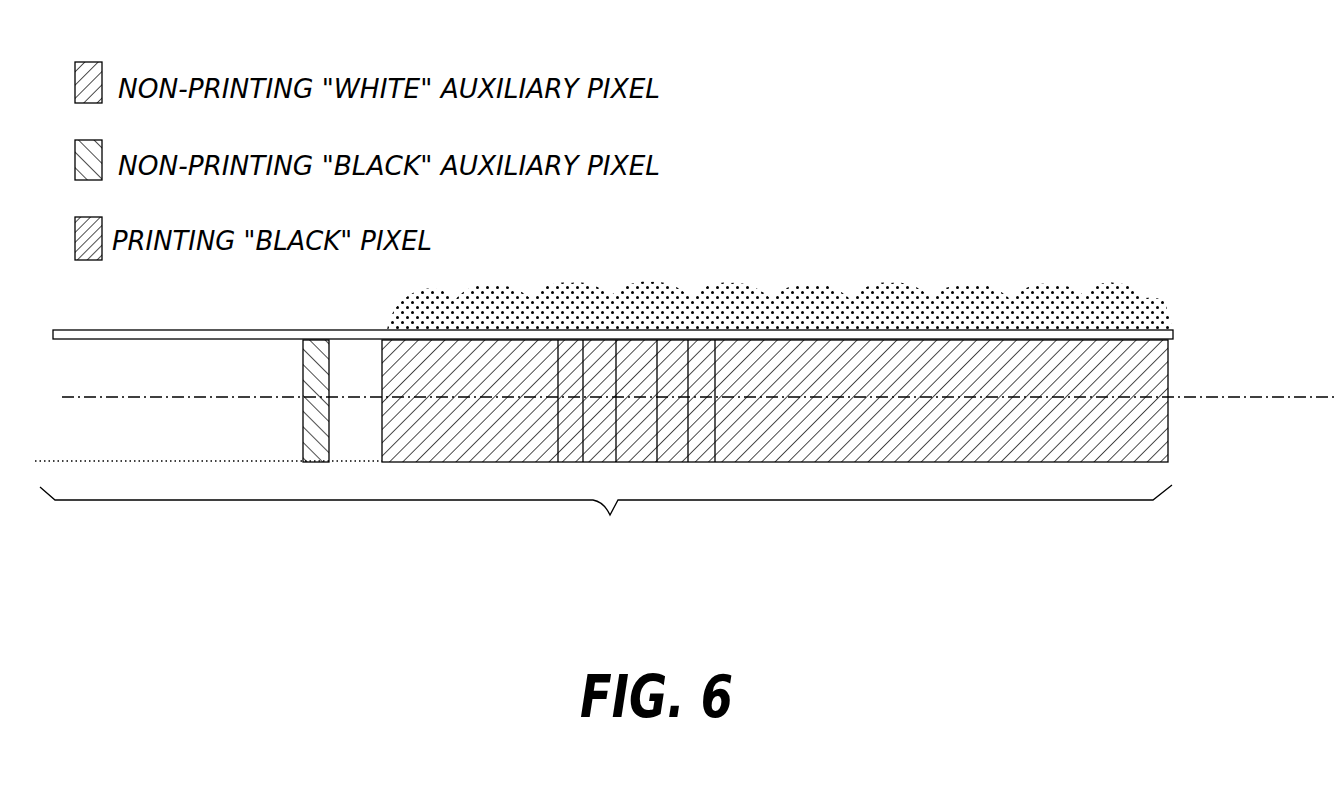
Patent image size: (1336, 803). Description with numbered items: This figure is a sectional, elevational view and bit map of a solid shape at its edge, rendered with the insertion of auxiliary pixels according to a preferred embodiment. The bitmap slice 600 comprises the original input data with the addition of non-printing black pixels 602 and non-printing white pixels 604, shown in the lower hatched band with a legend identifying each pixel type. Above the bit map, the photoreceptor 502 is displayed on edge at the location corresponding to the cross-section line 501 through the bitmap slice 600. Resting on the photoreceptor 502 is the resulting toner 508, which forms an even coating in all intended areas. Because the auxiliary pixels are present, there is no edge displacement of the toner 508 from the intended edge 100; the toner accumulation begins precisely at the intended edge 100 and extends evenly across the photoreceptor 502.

The intended edge 100 is at (382, 440).
The cross-section line 501 is at (1263, 397).
The photoreceptor 502 is at (154, 329).
The toner coating 508 is at (1100, 290).
The bitmap slice 600 is at (610, 515).
The non-printing black pixels 602 is at (307, 452).
The non-printing white pixels 604 is at (567, 457).